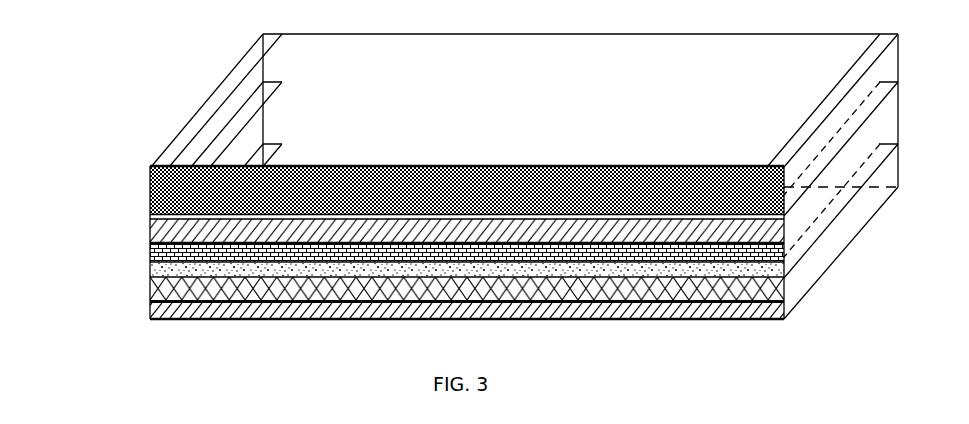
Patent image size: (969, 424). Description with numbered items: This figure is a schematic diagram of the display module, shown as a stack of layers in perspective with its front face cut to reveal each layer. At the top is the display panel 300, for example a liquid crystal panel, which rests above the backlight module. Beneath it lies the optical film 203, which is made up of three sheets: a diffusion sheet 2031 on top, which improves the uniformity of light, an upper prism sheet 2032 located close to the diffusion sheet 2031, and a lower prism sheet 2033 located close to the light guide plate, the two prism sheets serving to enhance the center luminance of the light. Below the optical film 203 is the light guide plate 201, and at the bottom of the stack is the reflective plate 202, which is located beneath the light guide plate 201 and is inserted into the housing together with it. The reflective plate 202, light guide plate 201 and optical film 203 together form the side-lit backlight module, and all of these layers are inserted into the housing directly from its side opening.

The display panel 300 is at (150, 186).
The optical film 203 is at (405, 234).
The diffusion sheet 2031 is at (150, 218).
The upper prism sheet 2032 is at (150, 240).
The lower prism sheet 2033 is at (150, 262).
The light guide plate 201 is at (150, 284).
The reflective plate 202 is at (150, 306).